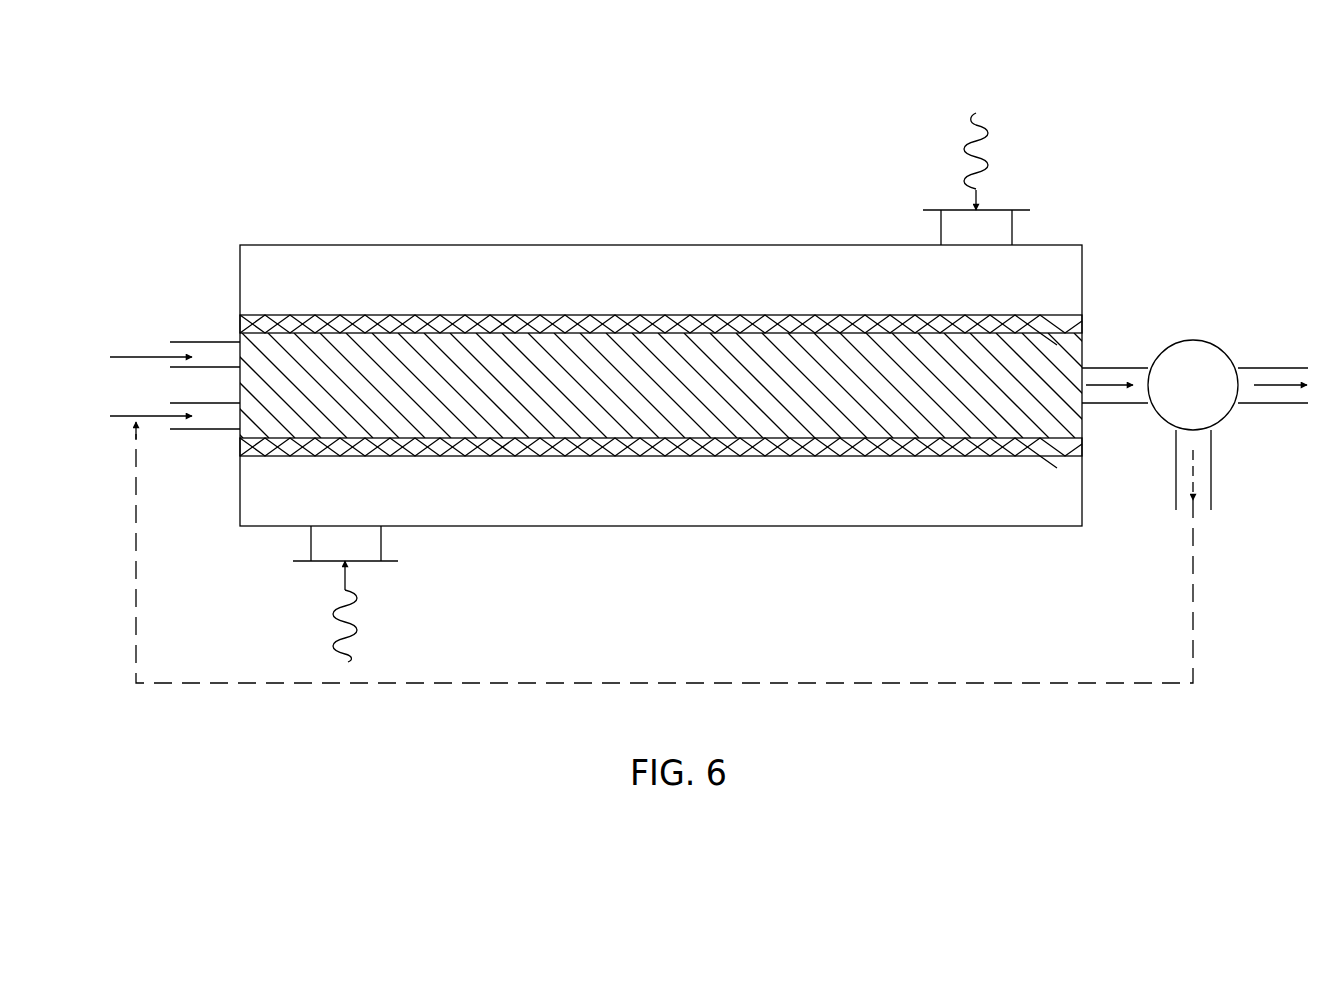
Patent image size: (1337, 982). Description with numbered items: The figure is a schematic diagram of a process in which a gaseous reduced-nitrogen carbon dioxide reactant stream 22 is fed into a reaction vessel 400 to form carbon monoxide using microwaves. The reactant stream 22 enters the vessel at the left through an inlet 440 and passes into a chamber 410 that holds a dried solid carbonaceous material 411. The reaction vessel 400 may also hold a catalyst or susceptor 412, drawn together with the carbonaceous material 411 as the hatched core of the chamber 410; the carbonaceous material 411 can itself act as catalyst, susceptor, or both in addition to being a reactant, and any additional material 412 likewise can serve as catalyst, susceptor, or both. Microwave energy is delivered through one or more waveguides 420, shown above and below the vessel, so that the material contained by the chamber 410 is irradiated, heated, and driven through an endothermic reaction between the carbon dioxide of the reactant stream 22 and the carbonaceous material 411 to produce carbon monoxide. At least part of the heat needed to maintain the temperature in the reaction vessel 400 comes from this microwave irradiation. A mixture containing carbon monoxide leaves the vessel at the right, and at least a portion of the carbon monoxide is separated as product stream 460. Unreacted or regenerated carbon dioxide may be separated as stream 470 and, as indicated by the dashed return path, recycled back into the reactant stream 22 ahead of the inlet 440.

The reaction vessel 400 is at (368, 158).
The chamber 410 is at (777, 325).
The dried solid carbonaceous material 411 is at (658, 385).
The catalyst or susceptor 412 is at (707, 399).
The waveguide 420 is at (955, 228).
The inlet 440 is at (140, 357).
The gaseous reduced-nitrogen carbon dioxide reactant stream 22 is at (148, 418).
The product stream 460 is at (1268, 385).
The recycle stream 470 is at (1195, 465).